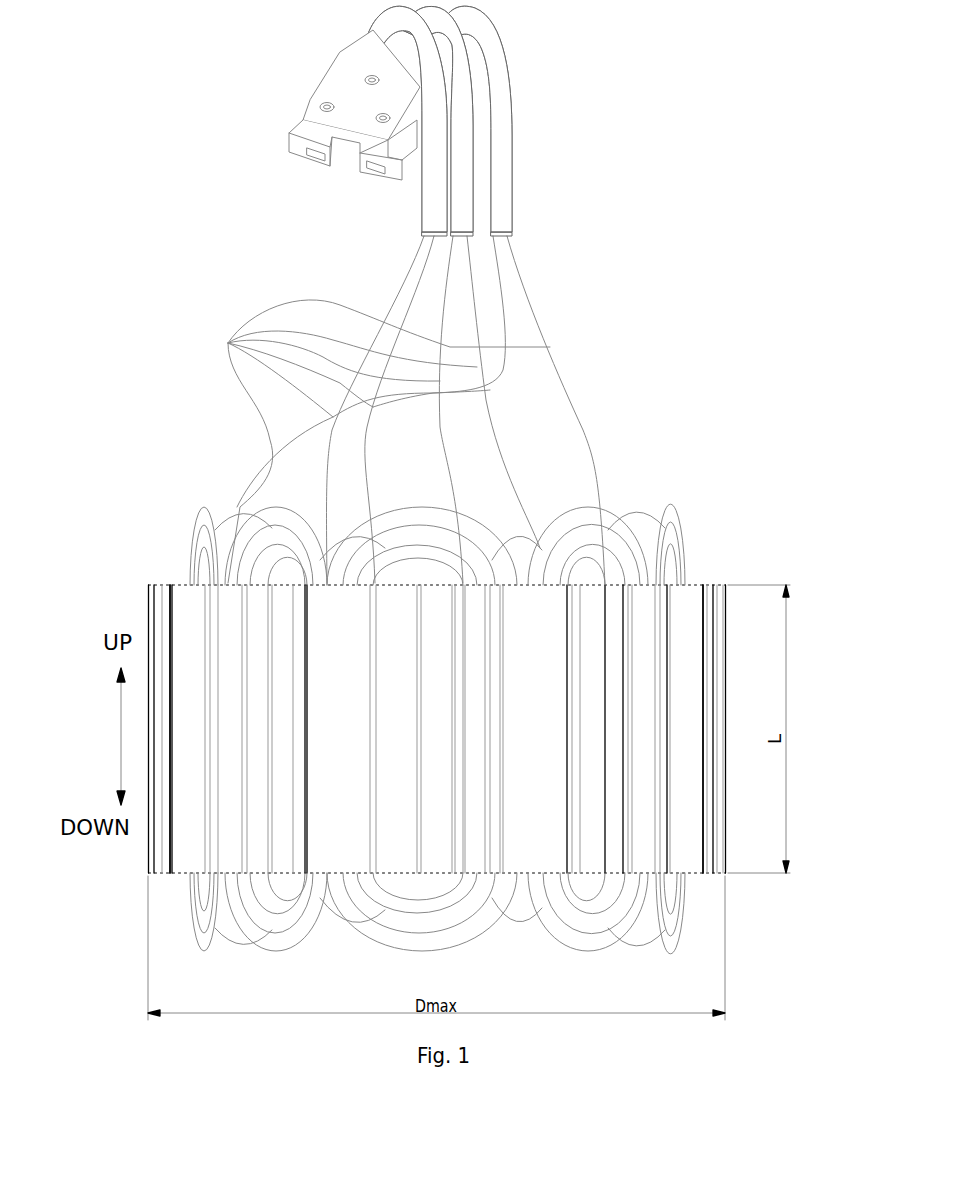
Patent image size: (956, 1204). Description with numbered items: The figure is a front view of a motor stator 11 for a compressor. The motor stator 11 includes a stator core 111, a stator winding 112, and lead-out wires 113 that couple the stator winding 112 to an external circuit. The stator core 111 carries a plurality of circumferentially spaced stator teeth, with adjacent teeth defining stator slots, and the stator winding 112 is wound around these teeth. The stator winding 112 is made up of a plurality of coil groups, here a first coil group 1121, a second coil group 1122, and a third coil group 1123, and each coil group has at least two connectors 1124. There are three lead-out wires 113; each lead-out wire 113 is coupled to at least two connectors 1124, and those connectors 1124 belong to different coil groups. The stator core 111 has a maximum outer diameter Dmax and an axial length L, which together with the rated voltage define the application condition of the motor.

The motor stator 11 is at (648, 172).
The stator core 111 is at (190, 647).
The stator winding 112 is at (668, 463).
The first coil group 1121 is at (247, 563).
The second coil group 1122 is at (468, 523).
The third coil group 1123 is at (630, 537).
The connectors 1124 is at (386, 410).
The lead-out wire 113 is at (468, 185).